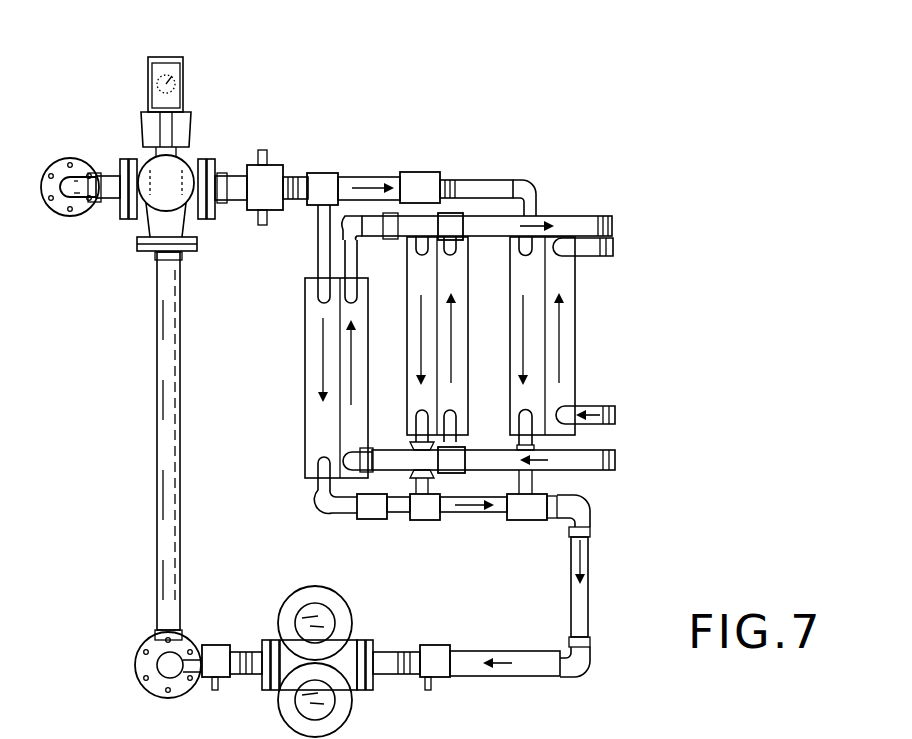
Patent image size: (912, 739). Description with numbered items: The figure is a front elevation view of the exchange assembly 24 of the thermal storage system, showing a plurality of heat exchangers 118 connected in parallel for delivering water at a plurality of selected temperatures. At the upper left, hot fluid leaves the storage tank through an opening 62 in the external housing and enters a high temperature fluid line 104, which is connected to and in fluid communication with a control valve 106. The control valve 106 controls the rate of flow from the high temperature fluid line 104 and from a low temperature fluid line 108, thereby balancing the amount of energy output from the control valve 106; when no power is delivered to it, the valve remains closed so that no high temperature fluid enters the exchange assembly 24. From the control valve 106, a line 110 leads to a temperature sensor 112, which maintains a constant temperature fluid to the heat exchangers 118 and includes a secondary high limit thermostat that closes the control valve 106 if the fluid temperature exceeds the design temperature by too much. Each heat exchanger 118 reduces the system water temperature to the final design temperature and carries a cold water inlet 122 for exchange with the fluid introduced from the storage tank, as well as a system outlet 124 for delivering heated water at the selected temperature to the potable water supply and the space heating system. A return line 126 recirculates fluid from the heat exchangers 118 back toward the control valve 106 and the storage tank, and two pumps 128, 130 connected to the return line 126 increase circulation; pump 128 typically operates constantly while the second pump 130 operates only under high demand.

The exchange assembly 24 is at (432, 114).
The opening 62 is at (68, 218).
The high temperature fluid line 104 is at (100, 202).
The control valve 106 is at (183, 107).
The low temperature fluid line 108 is at (157, 430).
The line 110 is at (230, 205).
The temperature sensor 112 is at (290, 165).
The heat exchanger 118 is at (310, 327).
The cold water inlet 122 is at (617, 460).
The system outlet 124 is at (616, 247).
The return line 126 is at (590, 598).
The pump 128 is at (285, 714).
The second pump 130 is at (351, 613).